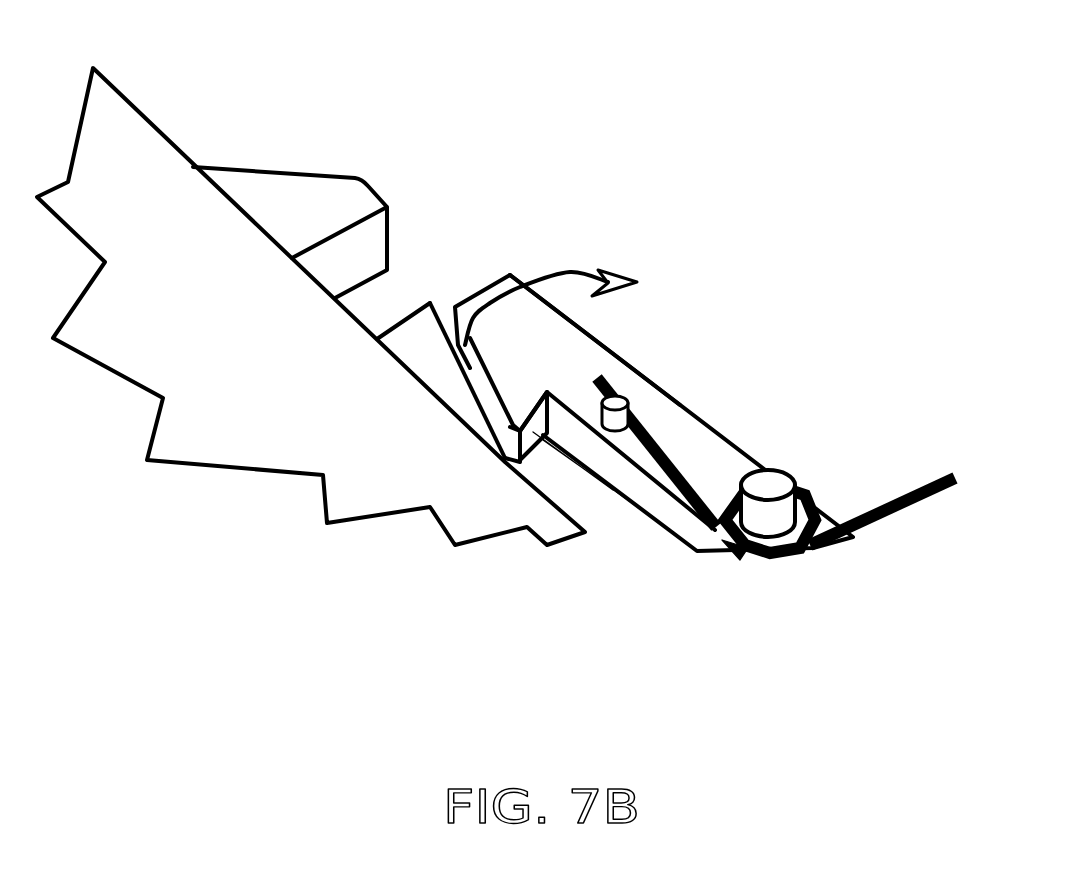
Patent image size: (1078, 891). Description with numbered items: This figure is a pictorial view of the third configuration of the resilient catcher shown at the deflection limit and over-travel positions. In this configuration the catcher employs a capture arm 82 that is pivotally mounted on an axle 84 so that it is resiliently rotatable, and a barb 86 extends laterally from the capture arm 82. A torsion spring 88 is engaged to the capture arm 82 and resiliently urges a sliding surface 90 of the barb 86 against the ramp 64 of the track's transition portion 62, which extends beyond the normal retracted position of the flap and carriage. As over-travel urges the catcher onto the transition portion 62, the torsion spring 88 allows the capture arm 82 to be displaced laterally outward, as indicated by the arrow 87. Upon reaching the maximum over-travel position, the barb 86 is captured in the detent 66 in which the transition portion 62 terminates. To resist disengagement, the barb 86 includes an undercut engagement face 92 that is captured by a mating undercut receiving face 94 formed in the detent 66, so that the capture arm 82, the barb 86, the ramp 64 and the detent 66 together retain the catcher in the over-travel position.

The transition portion 62 is at (423, 355).
The ramp 64 is at (478, 389).
The detent 66 is at (368, 300).
The capture arm 82 is at (635, 380).
The axle 84 is at (762, 482).
The barb 86 is at (512, 383).
The arrow 87 is at (555, 270).
The torsion spring 88 is at (733, 553).
The sliding surface 90 is at (500, 395).
The undercut engagement face 92 is at (533, 432).
The undercut receiving face 94 is at (400, 323).